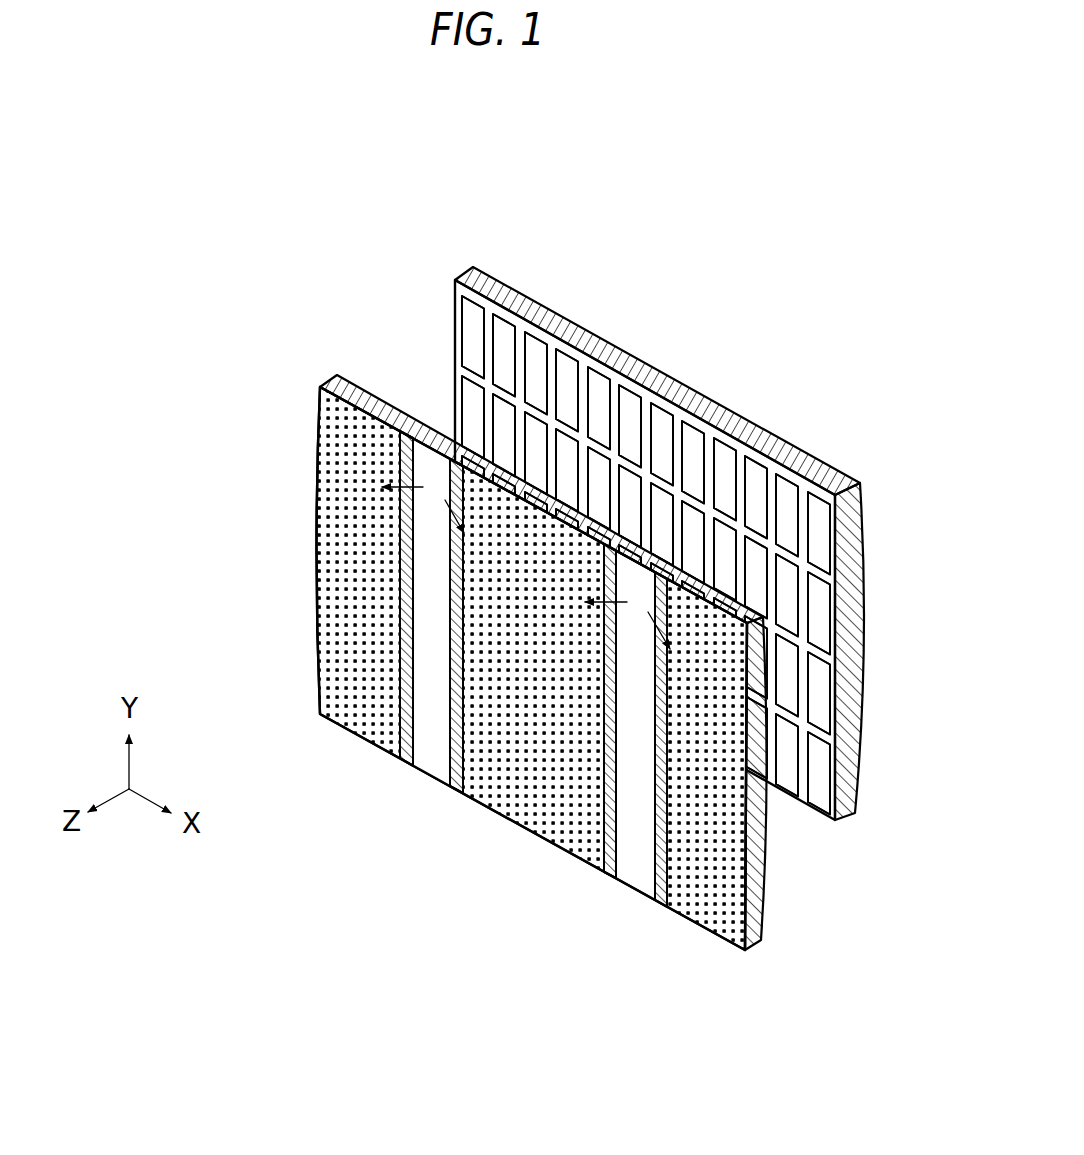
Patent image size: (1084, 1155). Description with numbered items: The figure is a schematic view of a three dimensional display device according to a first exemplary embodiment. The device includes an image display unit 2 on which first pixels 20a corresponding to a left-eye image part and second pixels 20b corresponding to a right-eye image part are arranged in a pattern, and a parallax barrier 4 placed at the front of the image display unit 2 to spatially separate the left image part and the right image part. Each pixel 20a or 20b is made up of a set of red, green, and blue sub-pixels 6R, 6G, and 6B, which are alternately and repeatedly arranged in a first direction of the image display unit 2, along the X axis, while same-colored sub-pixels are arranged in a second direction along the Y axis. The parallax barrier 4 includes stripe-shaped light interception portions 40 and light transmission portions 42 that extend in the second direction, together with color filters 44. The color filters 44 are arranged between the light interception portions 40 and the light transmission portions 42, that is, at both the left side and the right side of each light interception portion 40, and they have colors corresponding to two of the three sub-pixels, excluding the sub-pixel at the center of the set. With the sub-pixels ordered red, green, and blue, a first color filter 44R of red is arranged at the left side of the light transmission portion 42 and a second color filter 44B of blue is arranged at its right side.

The image display unit 2 is at (698, 490).
The parallax barrier 4 is at (539, 689).
The red sub-pixel 6R is at (469, 304).
The green sub-pixel 6G is at (500, 322).
The blue sub-pixel 6B is at (532, 340).
The first pixel 20a is at (568, 232).
The second pixel 20b is at (665, 287).
The light interception portion 40 is at (350, 470).
The light transmission portion 42 is at (425, 675).
The color filter 44 is at (512, 717).
The first color filter 44R is at (405, 757).
The second color filter 44B is at (457, 787).